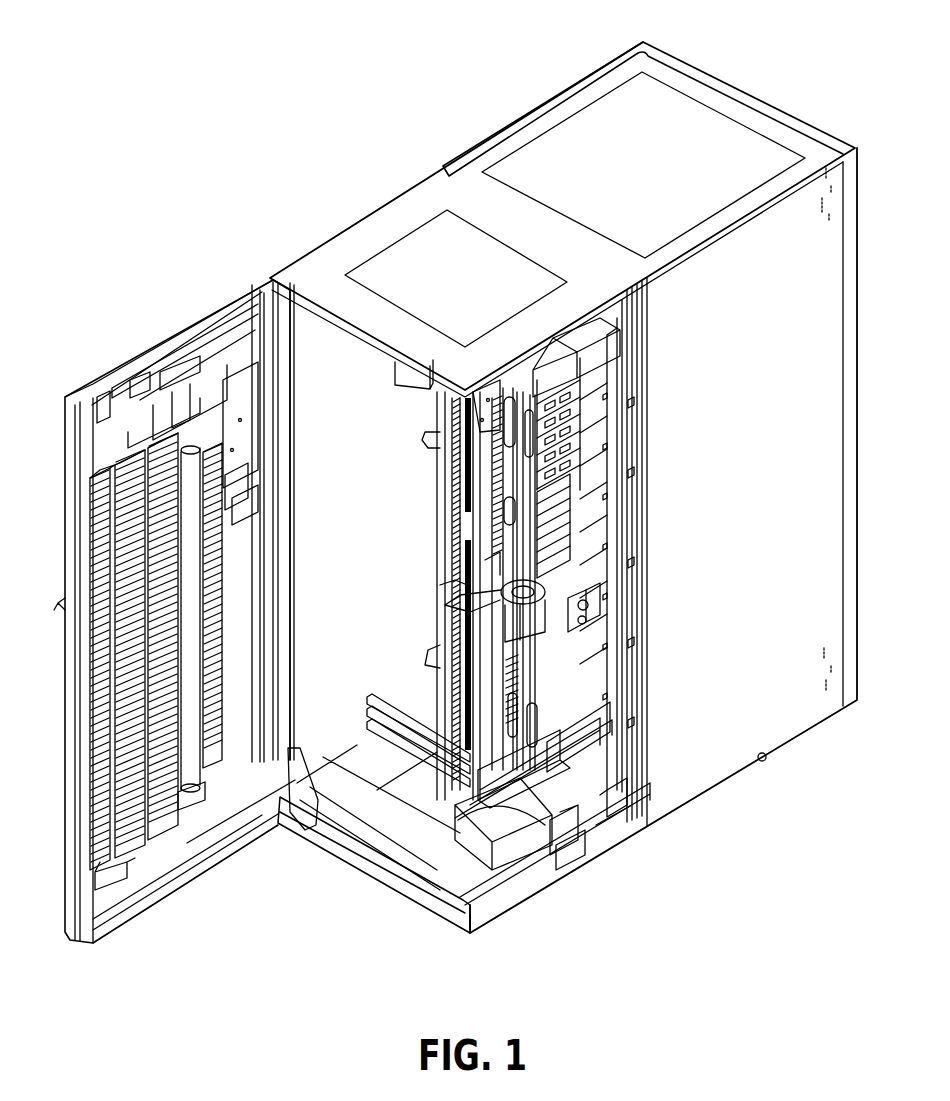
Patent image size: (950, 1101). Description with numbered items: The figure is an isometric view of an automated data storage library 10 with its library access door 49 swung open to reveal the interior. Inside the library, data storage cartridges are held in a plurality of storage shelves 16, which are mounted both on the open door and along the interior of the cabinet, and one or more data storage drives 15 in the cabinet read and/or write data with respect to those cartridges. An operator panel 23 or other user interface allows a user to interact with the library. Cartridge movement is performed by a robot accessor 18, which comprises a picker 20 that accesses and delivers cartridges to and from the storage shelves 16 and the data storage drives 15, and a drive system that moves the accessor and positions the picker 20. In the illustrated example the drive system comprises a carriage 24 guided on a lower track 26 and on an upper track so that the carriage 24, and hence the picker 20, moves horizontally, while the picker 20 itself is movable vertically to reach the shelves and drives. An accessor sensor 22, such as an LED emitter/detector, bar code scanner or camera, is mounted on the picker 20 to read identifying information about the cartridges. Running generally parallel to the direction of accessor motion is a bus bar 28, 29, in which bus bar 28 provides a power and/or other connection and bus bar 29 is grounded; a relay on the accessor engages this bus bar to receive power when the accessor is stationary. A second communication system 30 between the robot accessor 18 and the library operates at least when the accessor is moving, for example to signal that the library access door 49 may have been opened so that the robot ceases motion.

The automated data storage library 10 is at (183, 136).
The library access door 49 is at (90, 387).
The storage shelves 16 is at (90, 562).
The operator panel 23 is at (250, 407).
The data storage drive 15 is at (587, 370).
The accessor sensor 22 is at (480, 640).
The picker 20 is at (585, 608).
The bus bar 28 is at (372, 700).
The bus bar 29 is at (367, 710).
The lower track 26 is at (367, 727).
The robot accessor 18 is at (507, 823).
The carriage 24 is at (580, 840).
The second communication system 30 is at (615, 817).